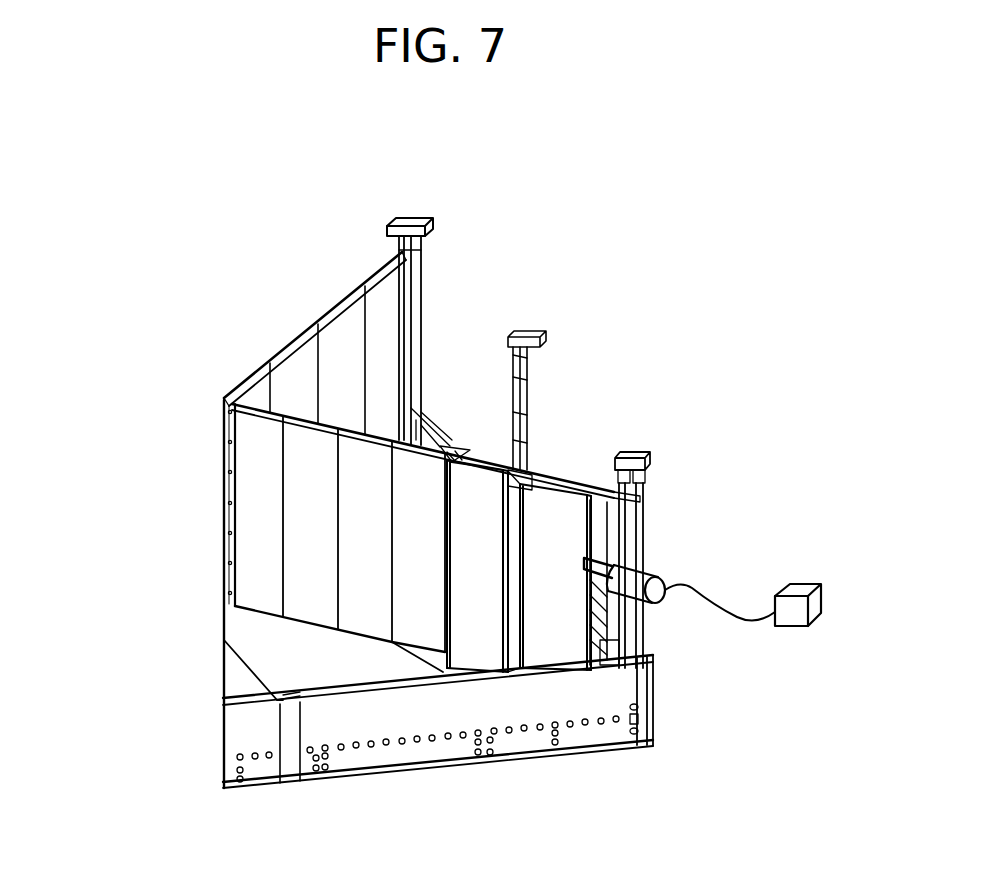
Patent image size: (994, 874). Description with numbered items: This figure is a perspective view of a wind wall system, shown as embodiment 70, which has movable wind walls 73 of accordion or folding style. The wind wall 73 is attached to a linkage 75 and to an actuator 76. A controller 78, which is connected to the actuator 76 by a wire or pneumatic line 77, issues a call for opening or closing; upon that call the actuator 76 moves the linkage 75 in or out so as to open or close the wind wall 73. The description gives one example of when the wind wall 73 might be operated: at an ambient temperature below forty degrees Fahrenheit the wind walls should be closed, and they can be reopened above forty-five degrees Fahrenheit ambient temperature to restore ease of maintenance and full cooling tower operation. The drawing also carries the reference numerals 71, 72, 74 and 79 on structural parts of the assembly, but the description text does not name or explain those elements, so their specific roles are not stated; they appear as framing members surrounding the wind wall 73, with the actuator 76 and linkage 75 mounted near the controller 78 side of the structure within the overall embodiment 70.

The embodiment 70 is at (168, 376).
The base beam 71 is at (438, 773).
The vertical post 72 is at (420, 290).
The wind wall 73 is at (523, 632).
The top rail 74 is at (553, 467).
The linkage 75 is at (600, 563).
The actuator 76 is at (648, 572).
The wire or pneumatic line 77 is at (737, 617).
The controller 78 is at (282, 525).
The diagonal brace rail 79 is at (295, 335).